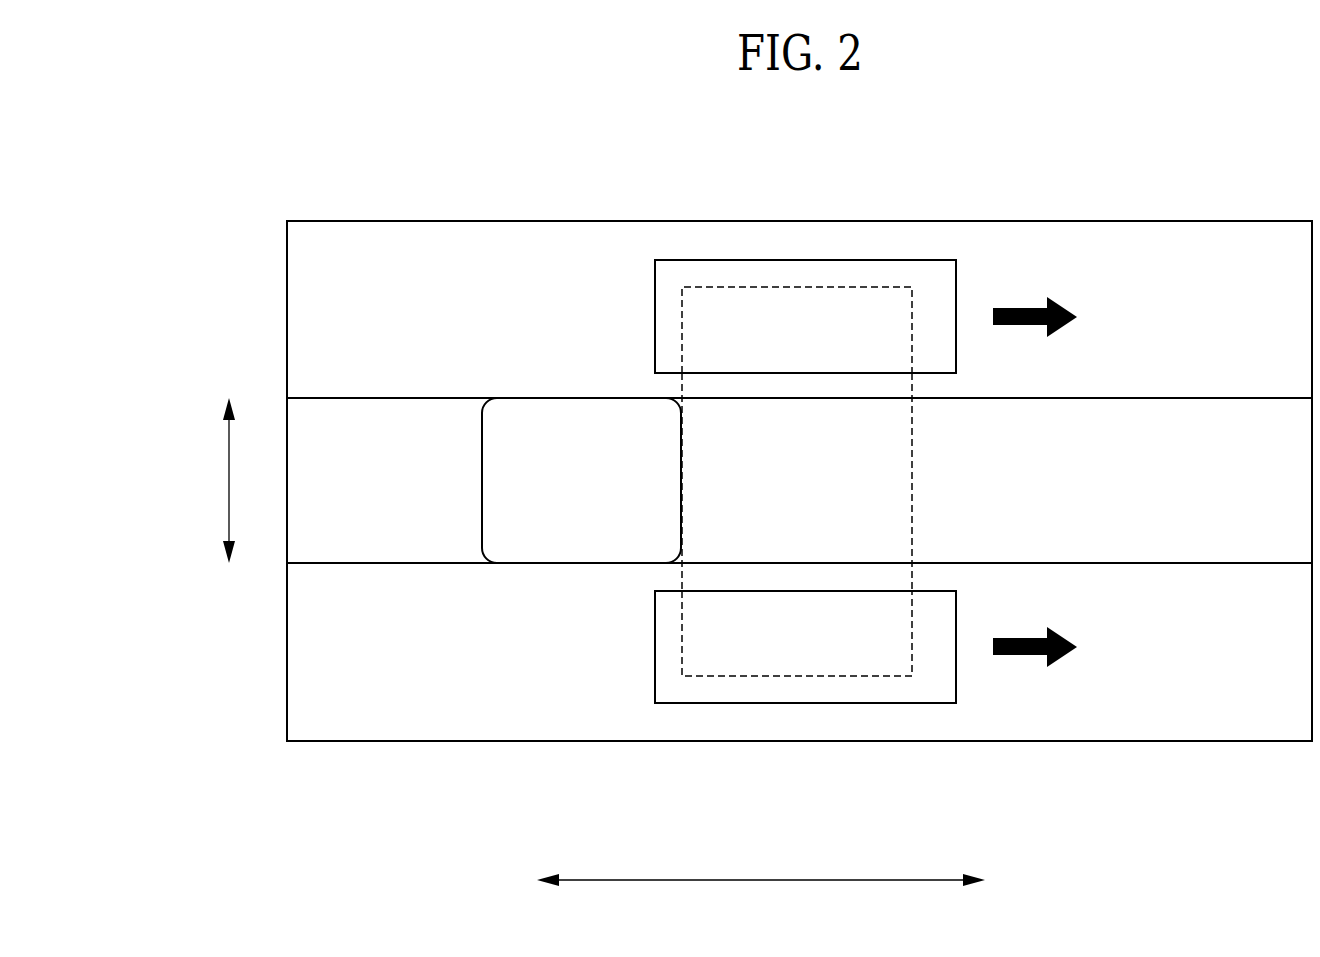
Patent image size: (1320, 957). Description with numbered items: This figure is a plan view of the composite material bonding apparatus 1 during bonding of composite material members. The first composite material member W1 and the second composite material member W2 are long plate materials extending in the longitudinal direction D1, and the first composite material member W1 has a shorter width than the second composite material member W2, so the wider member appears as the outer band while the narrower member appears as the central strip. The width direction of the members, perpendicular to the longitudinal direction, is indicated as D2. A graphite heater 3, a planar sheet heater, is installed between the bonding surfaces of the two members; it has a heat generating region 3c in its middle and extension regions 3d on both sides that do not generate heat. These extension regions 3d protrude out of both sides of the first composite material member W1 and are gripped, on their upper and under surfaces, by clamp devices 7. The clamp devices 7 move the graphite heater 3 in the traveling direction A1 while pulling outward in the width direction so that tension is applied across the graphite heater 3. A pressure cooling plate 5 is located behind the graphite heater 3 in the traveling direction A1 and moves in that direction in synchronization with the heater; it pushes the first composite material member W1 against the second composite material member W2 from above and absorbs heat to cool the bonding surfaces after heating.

The composite material bonding apparatus 1 is at (600, 244).
The graphite heater 3 is at (837, 483).
The heat generating region 3c is at (890, 512).
The extension regions 3d is at (768, 308).
The pressure cooling plate 5 is at (533, 410).
The clamp devices 7 is at (880, 260).
The traveling direction A1 is at (1015, 308).
The first composite material member W1 is at (1170, 398).
The second composite material member W2 is at (1176, 221).
The longitudinal direction D1 is at (761, 862).
The dimension D2 is at (211, 480).